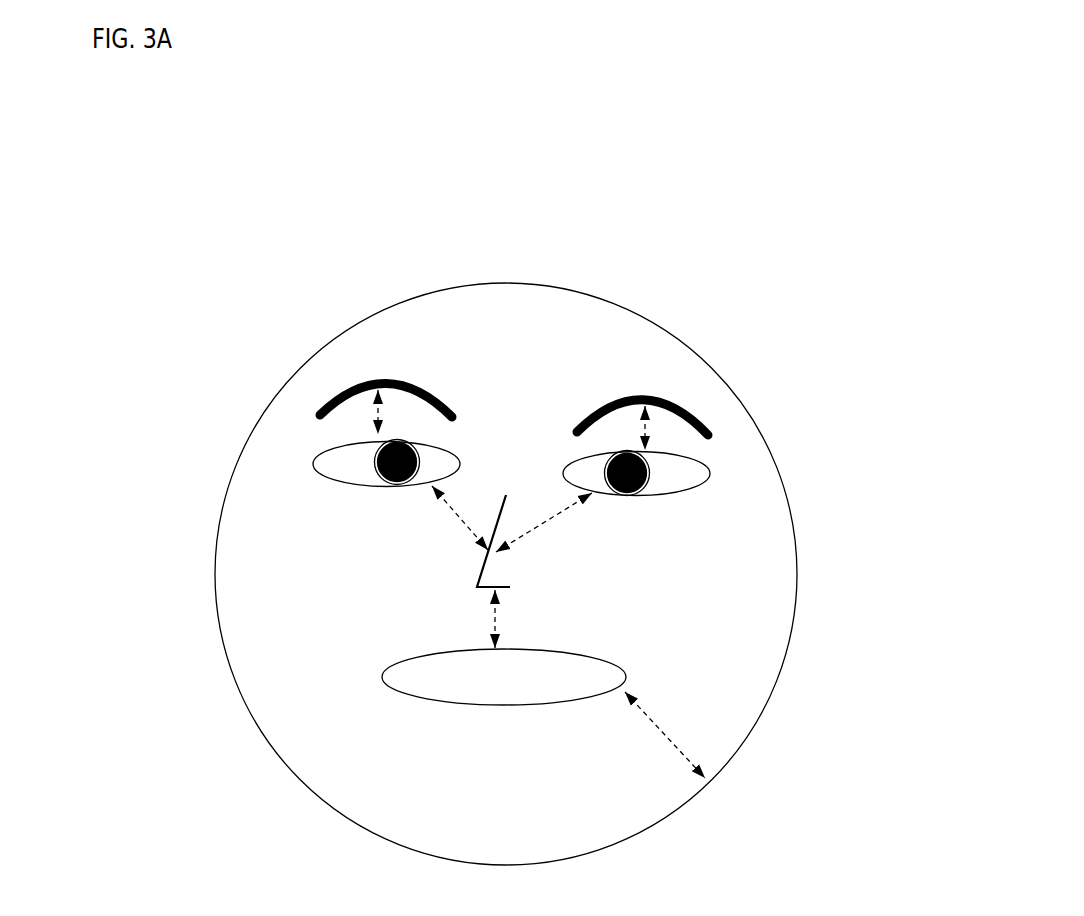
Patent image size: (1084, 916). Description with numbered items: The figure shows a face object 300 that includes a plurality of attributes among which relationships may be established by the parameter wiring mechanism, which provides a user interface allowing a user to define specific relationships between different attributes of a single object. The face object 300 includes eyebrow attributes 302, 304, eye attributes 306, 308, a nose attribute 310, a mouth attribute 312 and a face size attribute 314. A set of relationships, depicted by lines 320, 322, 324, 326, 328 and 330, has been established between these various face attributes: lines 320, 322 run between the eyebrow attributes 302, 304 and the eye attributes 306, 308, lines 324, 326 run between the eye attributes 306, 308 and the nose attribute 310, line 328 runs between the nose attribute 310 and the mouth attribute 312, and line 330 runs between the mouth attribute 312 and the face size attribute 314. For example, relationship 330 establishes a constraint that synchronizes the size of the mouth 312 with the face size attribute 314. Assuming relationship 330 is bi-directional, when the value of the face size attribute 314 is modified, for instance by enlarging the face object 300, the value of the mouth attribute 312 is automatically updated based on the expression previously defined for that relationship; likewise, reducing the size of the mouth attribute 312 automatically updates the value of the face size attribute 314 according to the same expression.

The face object 300 is at (528, 529).
The eyebrow attribute 302 is at (345, 384).
The eyebrow attribute 304 is at (701, 411).
The eye attribute 306 is at (311, 454).
The eye attribute 308 is at (716, 466).
The nose attribute 310 is at (504, 578).
The mouth attribute 312 is at (413, 700).
The face size attribute 314 is at (774, 721).
The relationship line 320 is at (392, 404).
The relationship line 322 is at (628, 427).
The relationship line 324 is at (456, 521).
The relationship line 326 is at (533, 524).
The relationship line 328 is at (504, 617).
The relationship 330 is at (649, 727).